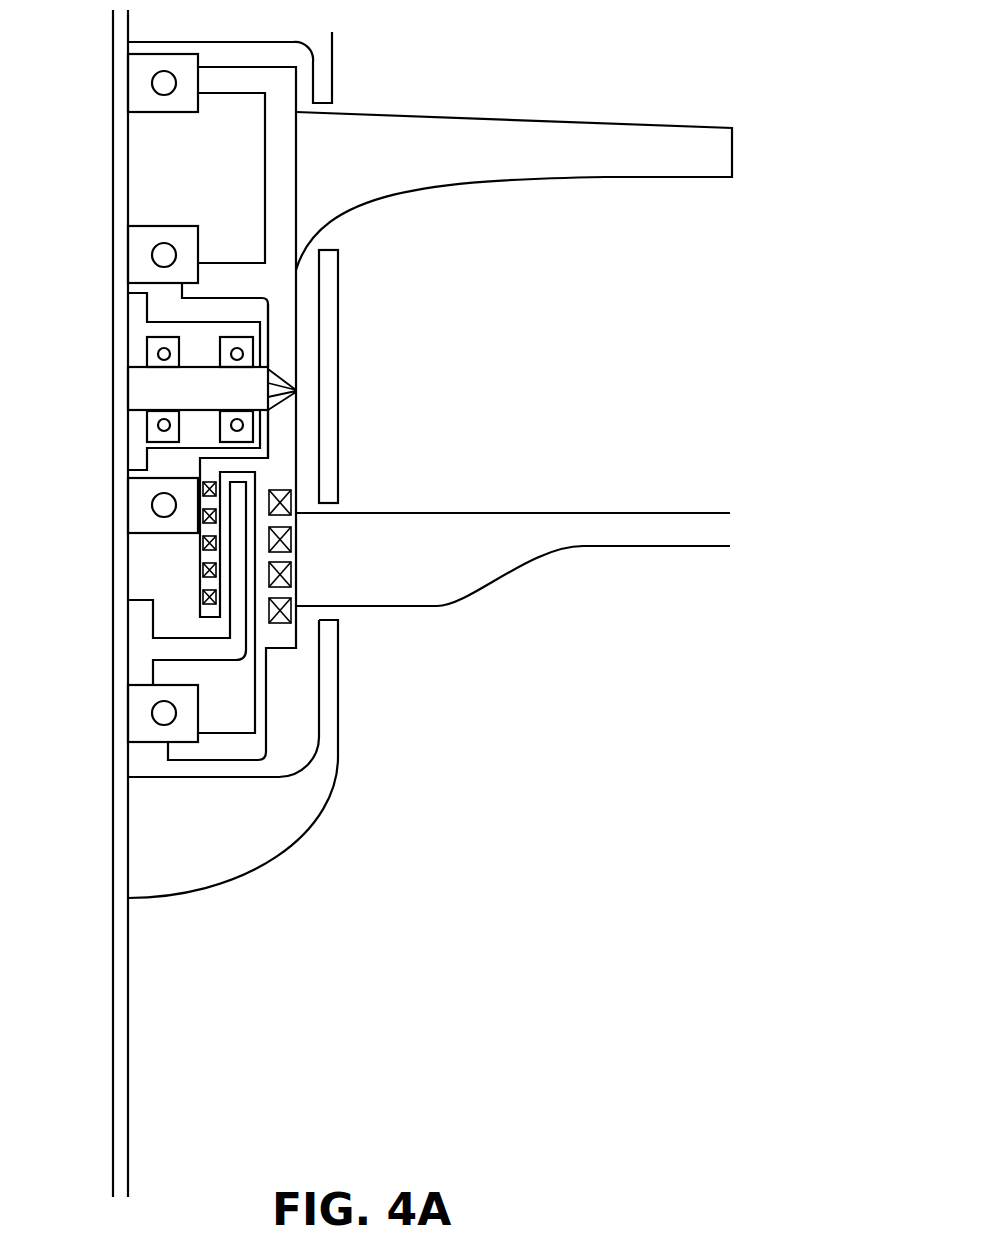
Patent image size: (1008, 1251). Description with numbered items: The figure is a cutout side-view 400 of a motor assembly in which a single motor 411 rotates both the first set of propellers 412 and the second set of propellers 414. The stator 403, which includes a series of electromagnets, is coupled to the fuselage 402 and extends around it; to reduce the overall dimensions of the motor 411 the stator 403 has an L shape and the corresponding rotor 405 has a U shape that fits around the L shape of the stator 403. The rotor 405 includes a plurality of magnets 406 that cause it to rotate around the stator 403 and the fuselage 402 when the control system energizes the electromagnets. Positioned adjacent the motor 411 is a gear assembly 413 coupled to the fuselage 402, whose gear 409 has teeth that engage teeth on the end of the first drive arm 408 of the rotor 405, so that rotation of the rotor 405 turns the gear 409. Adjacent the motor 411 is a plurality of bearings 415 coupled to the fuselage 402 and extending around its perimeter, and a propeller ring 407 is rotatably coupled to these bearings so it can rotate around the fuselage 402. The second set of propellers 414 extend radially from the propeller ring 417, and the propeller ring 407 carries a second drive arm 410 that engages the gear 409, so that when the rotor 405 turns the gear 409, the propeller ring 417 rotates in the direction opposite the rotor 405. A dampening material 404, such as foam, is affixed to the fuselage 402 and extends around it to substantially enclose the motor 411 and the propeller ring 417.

The cutout side-view 400 is at (575, 646).
The fuselage 402 is at (128, 992).
The stator 403 is at (150, 648).
The dampening material 404 is at (330, 58).
The rotor 405 is at (288, 638).
The magnets 406 is at (293, 535).
The propeller ring 407 is at (137, 492).
The first drive arm 408 is at (283, 433).
The gear 409 is at (296, 390).
The second drive arm 410 is at (280, 340).
The motor 411 is at (90, 515).
The first set of propellers 412 is at (530, 535).
The gear assembly 413 is at (153, 389).
The second set of propellers 414 is at (600, 155).
The bearings 415 is at (135, 75).
The propeller ring 417 is at (286, 216).